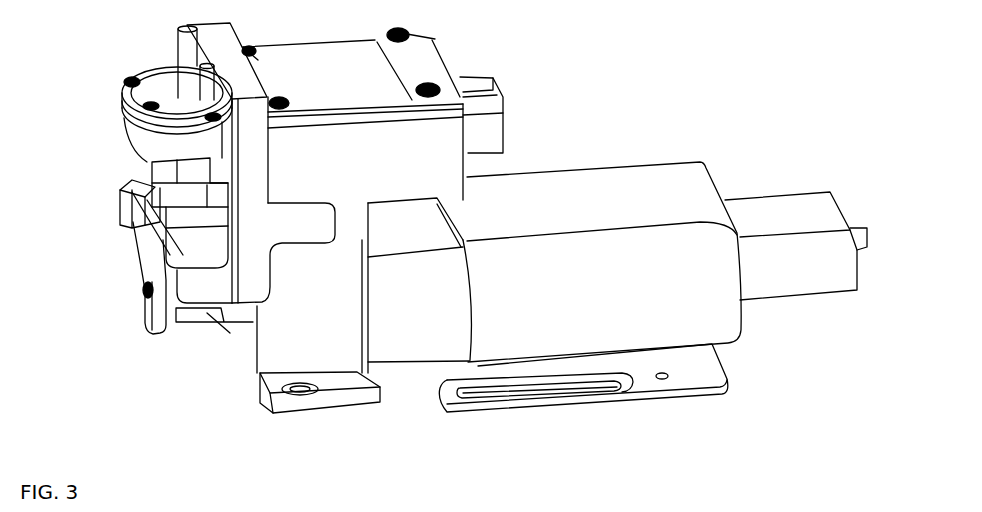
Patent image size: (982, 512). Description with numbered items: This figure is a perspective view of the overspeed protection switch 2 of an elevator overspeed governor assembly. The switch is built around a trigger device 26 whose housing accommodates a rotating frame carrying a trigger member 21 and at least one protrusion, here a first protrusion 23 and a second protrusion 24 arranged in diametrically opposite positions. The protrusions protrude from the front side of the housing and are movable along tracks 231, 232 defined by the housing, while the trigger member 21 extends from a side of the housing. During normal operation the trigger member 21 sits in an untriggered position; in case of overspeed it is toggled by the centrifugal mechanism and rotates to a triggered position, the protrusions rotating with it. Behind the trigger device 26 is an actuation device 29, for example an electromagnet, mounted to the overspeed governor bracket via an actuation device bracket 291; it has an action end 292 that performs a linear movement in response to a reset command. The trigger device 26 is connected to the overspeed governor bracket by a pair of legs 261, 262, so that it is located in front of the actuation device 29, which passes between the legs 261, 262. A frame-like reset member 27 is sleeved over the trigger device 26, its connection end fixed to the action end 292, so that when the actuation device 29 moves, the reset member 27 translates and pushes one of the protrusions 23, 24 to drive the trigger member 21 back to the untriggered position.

The overspeed protection switch 2 is at (590, 130).
The trigger member 21 is at (145, 193).
The first protrusion 23 is at (170, 58).
The track 231 is at (126, 78).
The track 232 is at (144, 103).
The second protrusion 24 is at (188, 57).
The trigger device 26 is at (317, 75).
The leg 261 is at (297, 320).
The leg 262 is at (220, 330).
The reset member 27 is at (245, 218).
The actuation device 29 is at (392, 333).
The actuation device bracket 291 is at (615, 203).
The action end 292 is at (140, 290).